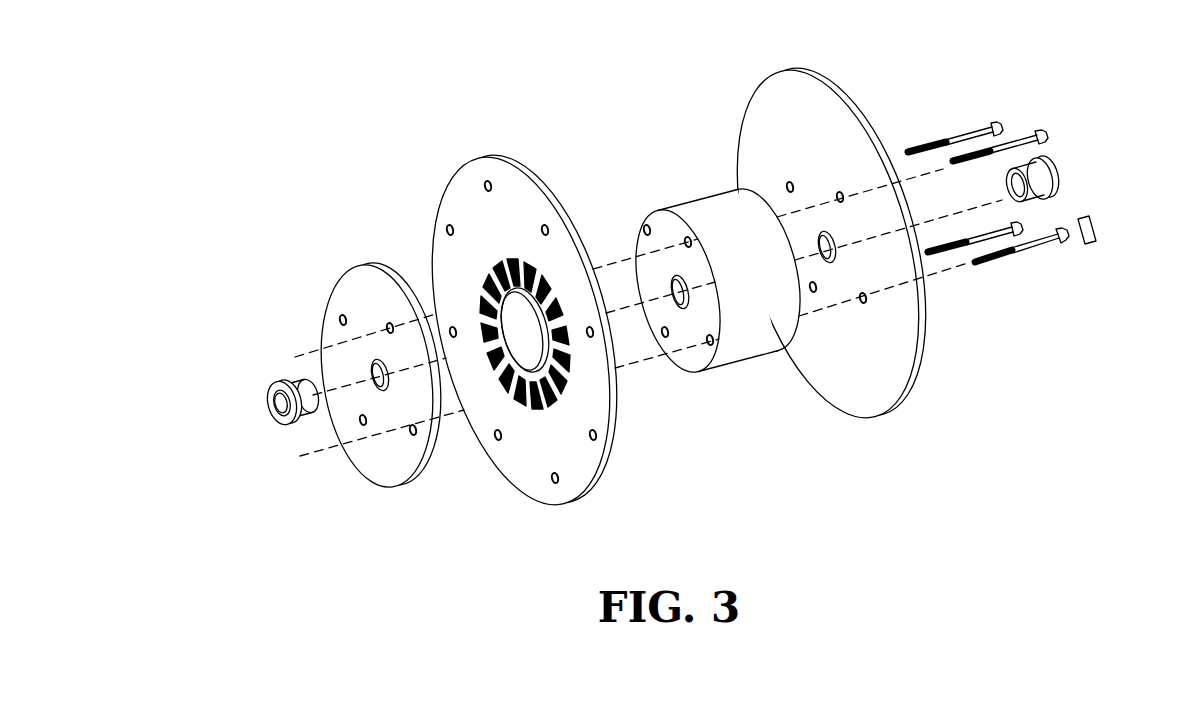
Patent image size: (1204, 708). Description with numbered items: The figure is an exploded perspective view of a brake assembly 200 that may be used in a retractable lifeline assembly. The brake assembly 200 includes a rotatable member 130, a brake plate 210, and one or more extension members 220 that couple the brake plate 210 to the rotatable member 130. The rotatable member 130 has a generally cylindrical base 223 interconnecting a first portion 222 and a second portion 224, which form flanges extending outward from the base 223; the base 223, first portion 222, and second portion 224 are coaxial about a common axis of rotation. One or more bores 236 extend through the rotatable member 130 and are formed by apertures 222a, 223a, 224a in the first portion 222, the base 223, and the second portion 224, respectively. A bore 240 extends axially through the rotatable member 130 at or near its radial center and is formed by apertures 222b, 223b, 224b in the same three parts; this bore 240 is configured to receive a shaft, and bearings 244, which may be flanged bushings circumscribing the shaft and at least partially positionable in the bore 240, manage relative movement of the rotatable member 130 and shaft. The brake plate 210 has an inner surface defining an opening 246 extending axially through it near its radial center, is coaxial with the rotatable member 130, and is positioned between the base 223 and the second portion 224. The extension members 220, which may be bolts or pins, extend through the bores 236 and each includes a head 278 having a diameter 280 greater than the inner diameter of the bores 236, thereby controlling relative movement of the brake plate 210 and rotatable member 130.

The rotatable member 130 is at (831, 246).
The brake assembly 200 is at (357, 133).
The brake plate 210 is at (530, 207).
The extension members 220 is at (982, 113).
The first portion 222 is at (853, 397).
The apertures 222a is at (790, 184).
The aperture 222b is at (834, 246).
The base 223 is at (703, 213).
The apertures 223a is at (644, 228).
The aperture 223b is at (689, 293).
The second portion 224 is at (388, 463).
The apertures 224a is at (342, 318).
The aperture 224b is at (385, 378).
The bores 236 is at (303, 347).
The bore 240 is at (332, 398).
The bearings 244 is at (262, 405).
The opening 246 is at (493, 267).
The head 278 is at (1073, 244).
The diameter 280 is at (1094, 223).